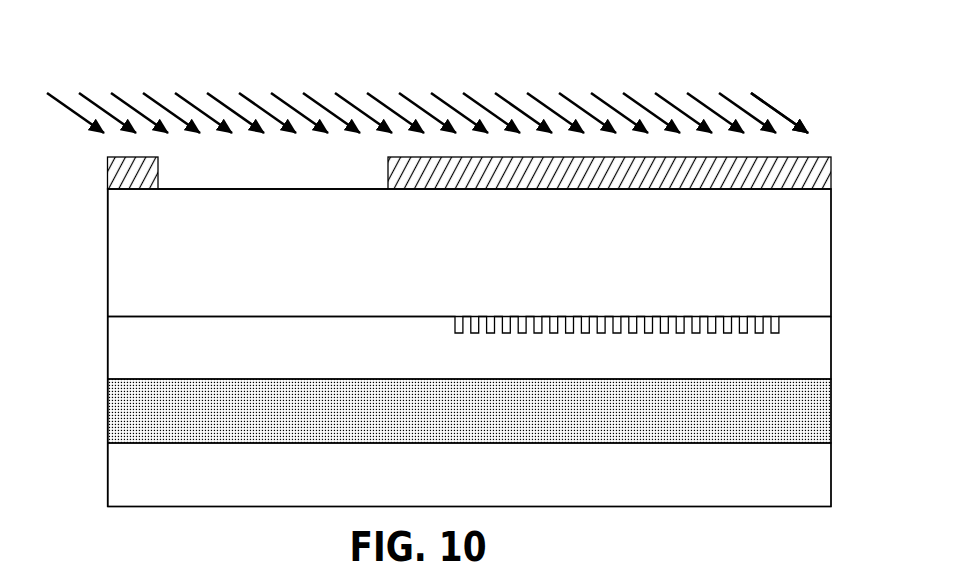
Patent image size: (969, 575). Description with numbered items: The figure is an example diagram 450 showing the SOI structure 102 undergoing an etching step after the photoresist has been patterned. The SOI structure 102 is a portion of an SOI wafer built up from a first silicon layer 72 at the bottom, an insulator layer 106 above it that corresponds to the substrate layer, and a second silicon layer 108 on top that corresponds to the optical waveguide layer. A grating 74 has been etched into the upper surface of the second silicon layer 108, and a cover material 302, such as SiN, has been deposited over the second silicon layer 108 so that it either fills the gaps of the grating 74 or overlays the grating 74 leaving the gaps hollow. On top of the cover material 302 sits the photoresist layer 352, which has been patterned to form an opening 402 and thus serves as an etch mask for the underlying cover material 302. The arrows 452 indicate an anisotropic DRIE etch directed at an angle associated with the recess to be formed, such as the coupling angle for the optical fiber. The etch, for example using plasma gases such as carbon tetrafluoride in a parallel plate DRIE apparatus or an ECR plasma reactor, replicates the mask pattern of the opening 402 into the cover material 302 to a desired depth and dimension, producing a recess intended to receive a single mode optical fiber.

The example diagram 450 is at (115, 47).
The arrows 452 is at (657, 77).
The photoresist layer 352 is at (607, 191).
The opening 402 is at (275, 197).
The cover material 302 is at (469, 253).
The grating 74 is at (632, 300).
The second silicon layer 108 is at (469, 348).
The insulator layer 106 is at (469, 411).
The first silicon layer 72 is at (469, 475).
The SOI structure 102 is at (107, 380).